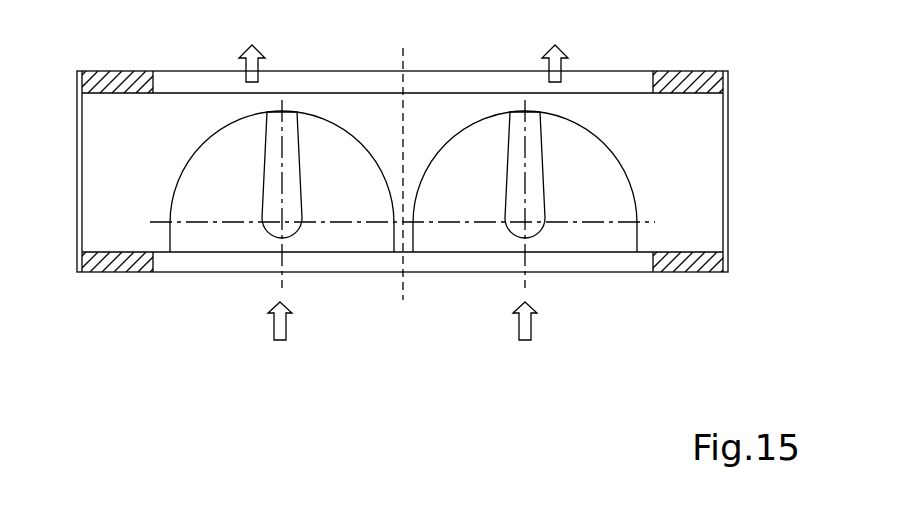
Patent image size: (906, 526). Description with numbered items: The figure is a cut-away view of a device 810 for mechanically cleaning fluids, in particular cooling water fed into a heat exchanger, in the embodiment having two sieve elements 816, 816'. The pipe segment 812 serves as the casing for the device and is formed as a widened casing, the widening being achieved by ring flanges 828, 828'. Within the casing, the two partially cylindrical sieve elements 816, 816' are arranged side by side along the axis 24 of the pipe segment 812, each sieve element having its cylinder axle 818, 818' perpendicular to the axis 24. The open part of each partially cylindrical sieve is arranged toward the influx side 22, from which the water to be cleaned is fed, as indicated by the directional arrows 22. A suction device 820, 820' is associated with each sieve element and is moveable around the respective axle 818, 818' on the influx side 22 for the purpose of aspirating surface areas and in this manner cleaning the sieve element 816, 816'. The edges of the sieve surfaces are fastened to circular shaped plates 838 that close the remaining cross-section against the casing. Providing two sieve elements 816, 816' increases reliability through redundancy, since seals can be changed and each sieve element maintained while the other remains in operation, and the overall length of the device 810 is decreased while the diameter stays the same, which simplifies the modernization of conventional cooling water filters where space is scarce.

The device 810 is at (98, 12).
The pipe segment 812 is at (732, 142).
The sieve element 816 is at (282, 144).
The sieve element 816' is at (521, 144).
The axle 818 is at (300, 308).
The axle 818' is at (577, 308).
The suction device 820 is at (225, 255).
The suction device 820' is at (488, 255).
The influx side 22 is at (273, 327).
The axis 24 is at (393, 223).
The ring flange 828 is at (404, 325).
The ring flange 828' is at (402, 47).
The circular shaped plate 838 is at (402, 235).